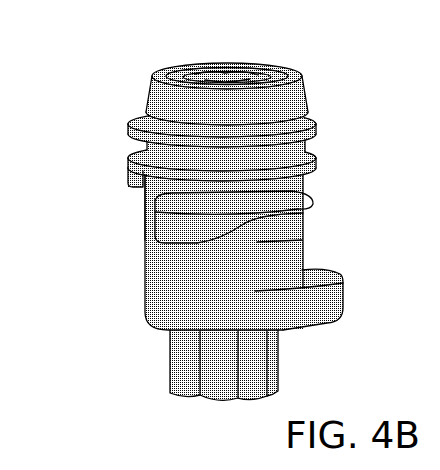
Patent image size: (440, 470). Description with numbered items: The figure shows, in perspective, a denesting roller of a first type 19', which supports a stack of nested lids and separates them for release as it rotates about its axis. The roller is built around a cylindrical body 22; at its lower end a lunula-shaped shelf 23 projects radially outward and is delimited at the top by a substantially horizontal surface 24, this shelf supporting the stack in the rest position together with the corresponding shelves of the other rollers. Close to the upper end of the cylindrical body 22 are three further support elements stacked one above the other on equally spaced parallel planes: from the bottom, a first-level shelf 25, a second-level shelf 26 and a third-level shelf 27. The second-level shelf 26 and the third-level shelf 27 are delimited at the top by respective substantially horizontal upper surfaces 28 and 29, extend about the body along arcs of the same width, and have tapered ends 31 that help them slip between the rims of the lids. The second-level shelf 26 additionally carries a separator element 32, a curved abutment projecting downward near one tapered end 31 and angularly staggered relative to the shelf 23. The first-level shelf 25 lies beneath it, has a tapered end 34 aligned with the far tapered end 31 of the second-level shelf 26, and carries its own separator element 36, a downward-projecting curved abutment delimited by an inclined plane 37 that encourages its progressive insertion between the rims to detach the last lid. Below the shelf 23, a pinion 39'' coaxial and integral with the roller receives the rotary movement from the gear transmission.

The denesting roller of a first type 19' is at (229, 202).
The cylindrical body 22 is at (145, 298).
The shelf 23 is at (345, 308).
The substantially horizontal surface 24 is at (322, 270).
The first-level shelf 25 is at (145, 203).
The second-level shelf 26 is at (124, 155).
The third-level shelf 27 is at (123, 114).
The upper surface 28 is at (210, 152).
The upper surface 29 is at (138, 96).
The tapered ends 31 is at (309, 152).
The separator element 32 is at (127, 178).
The tapered end 34 is at (313, 208).
The separator element 36 is at (143, 243).
The inclined plane 37 is at (252, 234).
The pinion 39'' is at (184, 365).